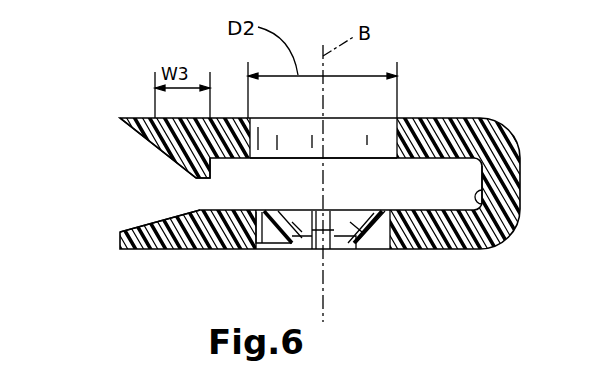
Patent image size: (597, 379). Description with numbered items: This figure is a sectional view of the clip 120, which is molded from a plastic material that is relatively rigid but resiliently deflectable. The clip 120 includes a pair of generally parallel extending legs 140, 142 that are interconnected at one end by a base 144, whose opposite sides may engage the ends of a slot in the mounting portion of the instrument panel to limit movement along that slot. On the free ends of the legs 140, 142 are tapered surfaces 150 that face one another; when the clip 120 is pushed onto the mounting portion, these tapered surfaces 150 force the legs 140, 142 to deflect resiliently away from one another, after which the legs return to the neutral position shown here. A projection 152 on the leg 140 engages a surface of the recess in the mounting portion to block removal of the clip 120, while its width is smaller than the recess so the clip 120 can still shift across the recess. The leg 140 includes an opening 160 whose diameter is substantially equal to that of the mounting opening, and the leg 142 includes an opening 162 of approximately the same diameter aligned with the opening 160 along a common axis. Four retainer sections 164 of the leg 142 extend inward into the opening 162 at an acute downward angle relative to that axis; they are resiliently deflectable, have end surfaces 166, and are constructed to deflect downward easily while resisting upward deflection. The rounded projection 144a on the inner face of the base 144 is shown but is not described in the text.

The clip 120 is at (490, 107).
The leg 140 is at (432, 128).
The leg 142 is at (435, 230).
The base 144 is at (503, 184).
The projection on end wall 144a is at (482, 207).
The tapered surfaces 150 is at (160, 221).
The projection 152 is at (205, 174).
The opening 160 is at (393, 142).
The opening 162 is at (258, 250).
The retainer sections 164 is at (345, 225).
The end surfaces 166 is at (342, 249).